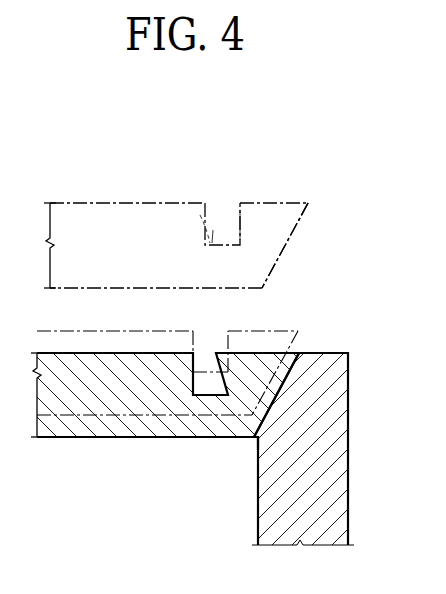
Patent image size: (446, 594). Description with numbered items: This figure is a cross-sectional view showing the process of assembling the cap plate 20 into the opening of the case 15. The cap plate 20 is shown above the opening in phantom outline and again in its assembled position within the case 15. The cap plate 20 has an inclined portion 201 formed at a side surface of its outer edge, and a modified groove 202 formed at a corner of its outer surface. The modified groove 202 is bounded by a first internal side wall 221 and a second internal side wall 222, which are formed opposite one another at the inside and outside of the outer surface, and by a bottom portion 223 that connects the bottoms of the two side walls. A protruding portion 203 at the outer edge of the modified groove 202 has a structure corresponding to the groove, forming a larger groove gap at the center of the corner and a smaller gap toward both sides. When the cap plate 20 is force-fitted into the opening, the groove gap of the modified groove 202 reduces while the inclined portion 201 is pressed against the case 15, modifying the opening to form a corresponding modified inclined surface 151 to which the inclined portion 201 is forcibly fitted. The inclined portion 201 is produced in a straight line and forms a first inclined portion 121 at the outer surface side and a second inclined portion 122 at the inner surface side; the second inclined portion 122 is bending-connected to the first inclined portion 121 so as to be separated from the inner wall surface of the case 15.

The cap plate 20 is at (78, 349).
The inclined portion 201 is at (272, 272).
The modified groove 202 is at (222, 244).
The protruding portion 203 is at (308, 205).
The first internal side wall 221 is at (212, 240).
The second internal side wall 222 is at (240, 207).
The bottom portion 223 is at (184, 208).
The case 15 is at (330, 472).
The modified inclined surface 151 is at (283, 385).
The first inclined portion 121 is at (282, 415).
The second inclined portion 122 is at (258, 438).